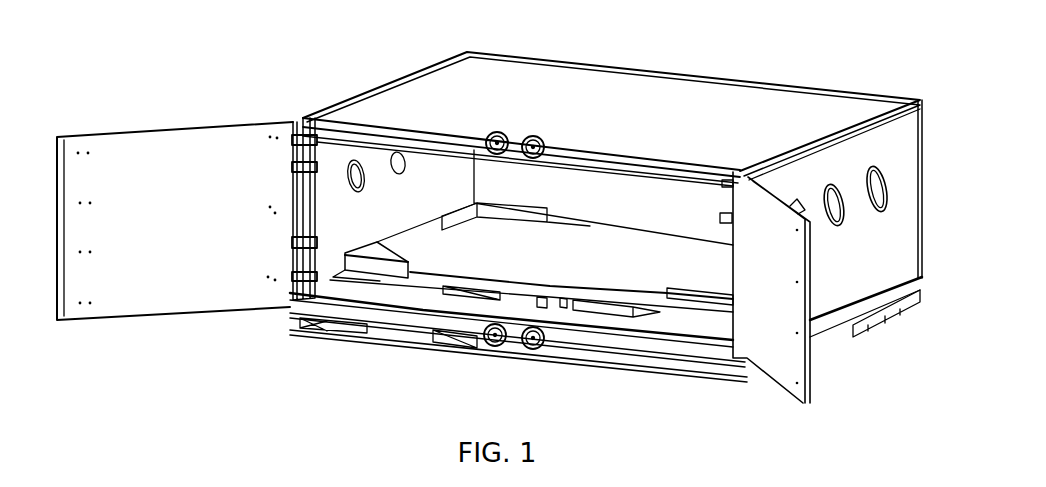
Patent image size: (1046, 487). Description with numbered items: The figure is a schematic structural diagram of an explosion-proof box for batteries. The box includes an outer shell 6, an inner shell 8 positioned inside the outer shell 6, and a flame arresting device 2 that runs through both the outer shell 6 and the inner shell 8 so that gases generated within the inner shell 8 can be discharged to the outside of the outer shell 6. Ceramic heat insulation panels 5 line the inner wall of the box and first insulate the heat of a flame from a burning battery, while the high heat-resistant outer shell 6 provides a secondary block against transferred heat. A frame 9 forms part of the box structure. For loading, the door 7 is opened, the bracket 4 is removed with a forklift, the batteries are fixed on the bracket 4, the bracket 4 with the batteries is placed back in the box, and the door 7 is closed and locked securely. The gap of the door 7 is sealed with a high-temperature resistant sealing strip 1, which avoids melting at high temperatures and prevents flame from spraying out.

The sealing strip 1 is at (307, 119).
The flame arresting device 2 is at (883, 168).
The bracket 4 is at (583, 301).
The heat insulation panel 5 is at (333, 233).
The outer shell 6 is at (410, 100).
The door 7 is at (177, 153).
The inner shell 8 is at (293, 267).
The frame 9 is at (447, 340).